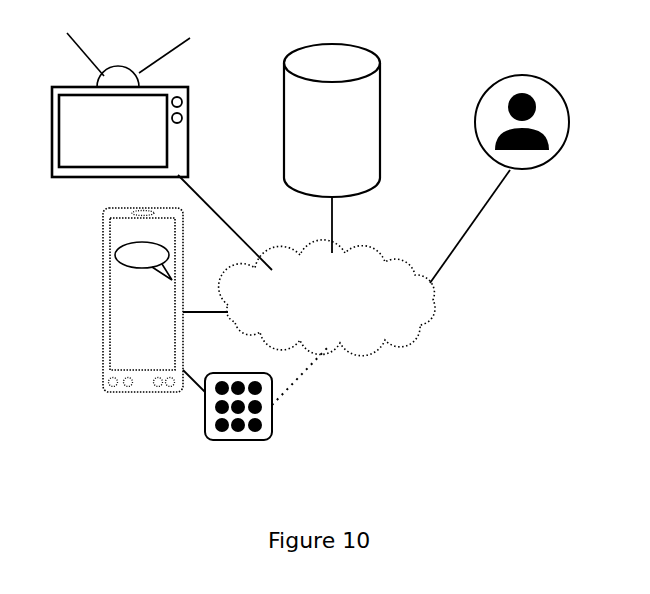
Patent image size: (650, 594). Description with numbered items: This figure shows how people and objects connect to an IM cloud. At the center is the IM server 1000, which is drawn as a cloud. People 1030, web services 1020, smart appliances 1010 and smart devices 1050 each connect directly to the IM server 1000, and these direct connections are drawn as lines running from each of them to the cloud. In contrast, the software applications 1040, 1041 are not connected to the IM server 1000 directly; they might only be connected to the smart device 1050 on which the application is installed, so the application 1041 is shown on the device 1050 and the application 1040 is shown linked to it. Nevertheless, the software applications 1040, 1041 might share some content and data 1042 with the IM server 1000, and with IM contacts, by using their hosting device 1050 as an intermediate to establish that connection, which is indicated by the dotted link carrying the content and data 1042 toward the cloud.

The IM server 1000 is at (327, 298).
The smart appliances 1010 is at (121, 105).
The web services 1020 is at (332, 120).
The people 1030 is at (477, 133).
The software application 1040 is at (205, 420).
The software application 1041 is at (143, 261).
The content and data 1042 is at (302, 368).
The smart devices 1050 is at (143, 300).